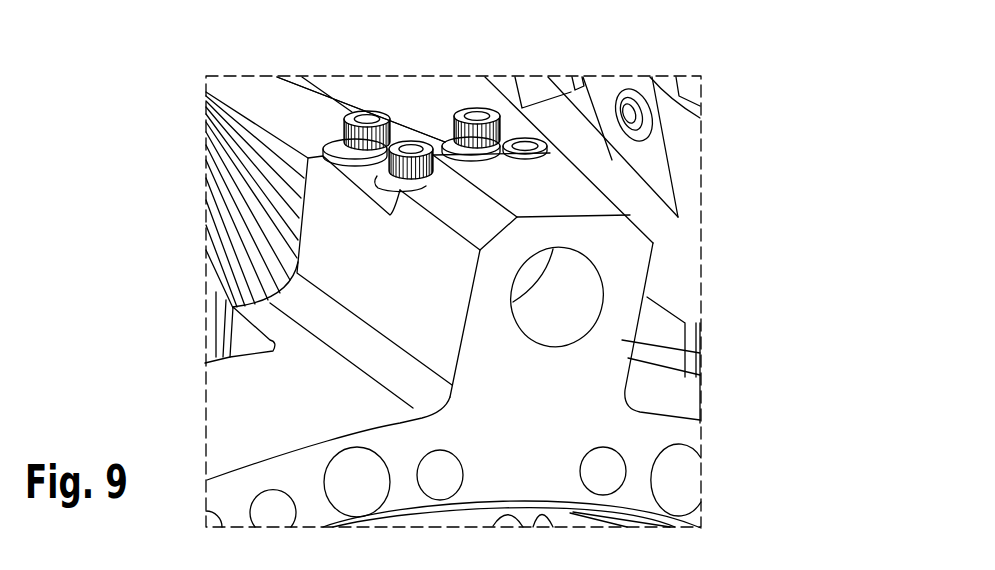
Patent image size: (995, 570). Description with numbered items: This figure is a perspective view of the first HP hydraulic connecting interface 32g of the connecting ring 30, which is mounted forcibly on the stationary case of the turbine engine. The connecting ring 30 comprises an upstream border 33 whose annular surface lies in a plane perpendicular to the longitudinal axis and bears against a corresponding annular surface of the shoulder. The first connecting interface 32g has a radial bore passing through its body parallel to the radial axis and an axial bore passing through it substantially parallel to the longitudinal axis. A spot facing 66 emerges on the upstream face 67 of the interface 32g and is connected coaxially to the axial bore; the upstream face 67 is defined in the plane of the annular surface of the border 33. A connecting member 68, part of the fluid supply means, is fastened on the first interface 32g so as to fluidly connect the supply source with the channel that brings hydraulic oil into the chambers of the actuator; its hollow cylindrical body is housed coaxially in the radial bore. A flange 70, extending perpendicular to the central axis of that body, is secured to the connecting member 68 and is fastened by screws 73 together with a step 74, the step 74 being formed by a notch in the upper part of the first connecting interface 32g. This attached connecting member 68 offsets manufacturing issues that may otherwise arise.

The connecting ring 30 is at (257, 418).
The first HP hydraulic connecting interface 32g is at (688, 364).
The upstream border 33 is at (680, 428).
The spot facing 66 is at (583, 268).
The upstream face 67 is at (627, 291).
The connecting member 68 is at (340, 100).
The flange 70 is at (432, 133).
The screws 73 is at (367, 116).
The step 74 is at (310, 173).